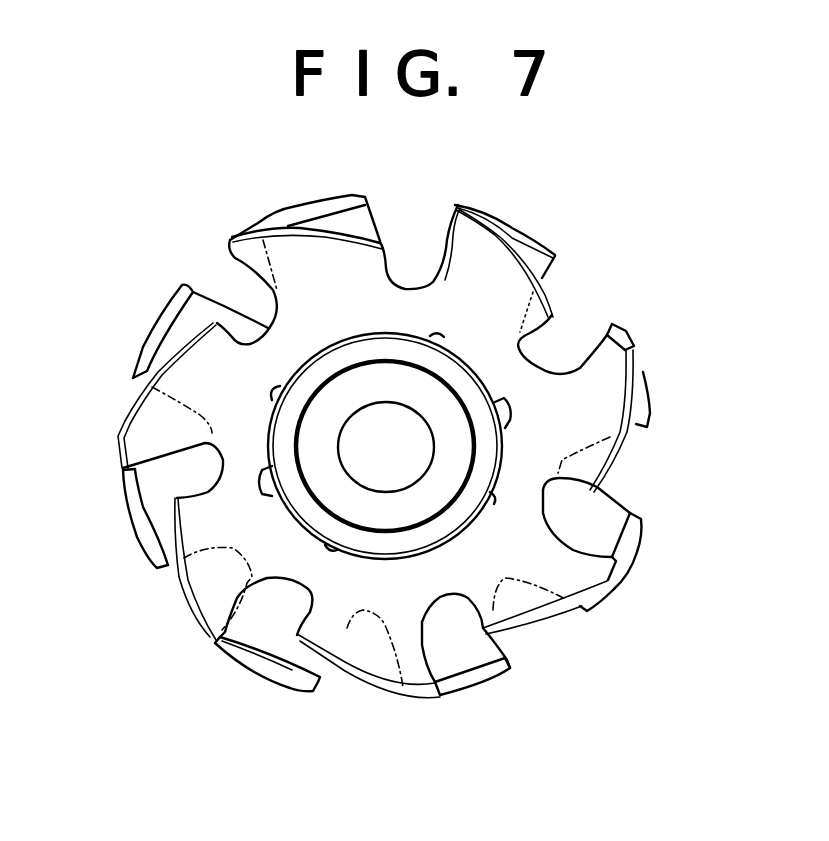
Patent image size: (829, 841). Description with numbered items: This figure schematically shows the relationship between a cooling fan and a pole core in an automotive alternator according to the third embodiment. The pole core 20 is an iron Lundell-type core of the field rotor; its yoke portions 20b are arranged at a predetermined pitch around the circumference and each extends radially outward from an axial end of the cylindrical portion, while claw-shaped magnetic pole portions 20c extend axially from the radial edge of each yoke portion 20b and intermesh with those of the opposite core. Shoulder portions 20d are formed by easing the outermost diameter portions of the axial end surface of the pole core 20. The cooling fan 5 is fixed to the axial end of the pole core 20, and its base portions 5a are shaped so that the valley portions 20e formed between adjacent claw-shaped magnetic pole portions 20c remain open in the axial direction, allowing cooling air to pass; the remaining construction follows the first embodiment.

The pole core 20 is at (393, 428).
The yoke portion 20b is at (578, 360).
The claw-shaped magnetic pole portion 20c is at (629, 344).
The shoulder portion 20d is at (528, 242).
The valley portion 20e is at (408, 257).
The cooling fan 5 is at (122, 397).
The base portion 5a is at (193, 363).